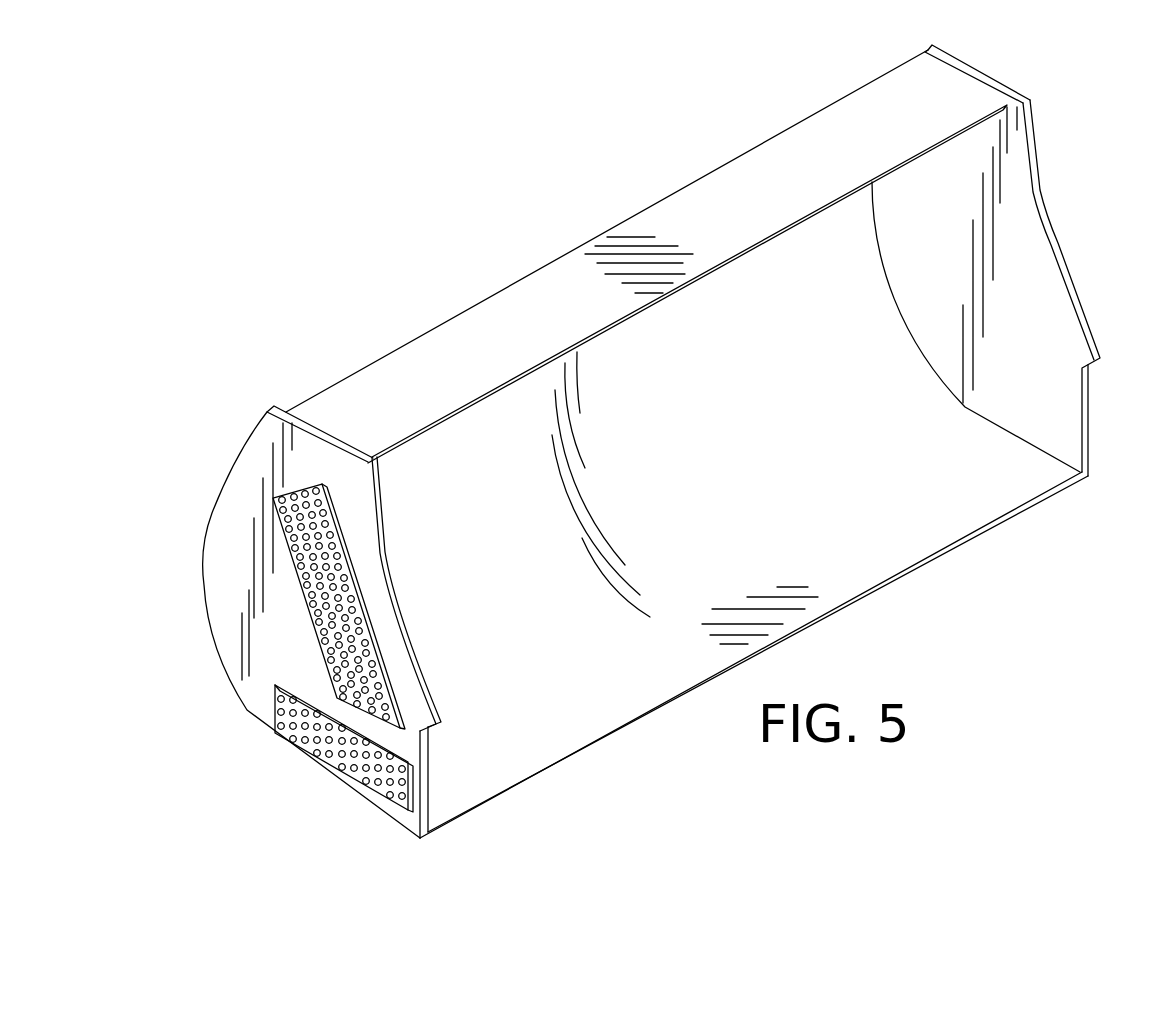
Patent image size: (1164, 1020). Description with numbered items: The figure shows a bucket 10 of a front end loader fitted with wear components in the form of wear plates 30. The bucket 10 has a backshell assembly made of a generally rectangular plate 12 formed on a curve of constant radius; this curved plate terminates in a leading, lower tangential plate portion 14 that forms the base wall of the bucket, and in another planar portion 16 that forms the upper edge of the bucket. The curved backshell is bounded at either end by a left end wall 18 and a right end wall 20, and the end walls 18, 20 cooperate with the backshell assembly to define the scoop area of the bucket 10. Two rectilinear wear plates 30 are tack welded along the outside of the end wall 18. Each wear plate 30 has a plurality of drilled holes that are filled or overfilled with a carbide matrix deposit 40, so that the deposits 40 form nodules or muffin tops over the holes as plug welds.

The bucket 10 is at (498, 240).
The generally rectangular plate 12 is at (874, 279).
The lower tangential plate portion 14 is at (570, 755).
The planar portion 16 is at (460, 332).
The left end wall 18 is at (223, 618).
The right end wall 20 is at (1052, 287).
The wear plate 30 is at (364, 602).
The carbide matrix deposit 40 is at (333, 547).